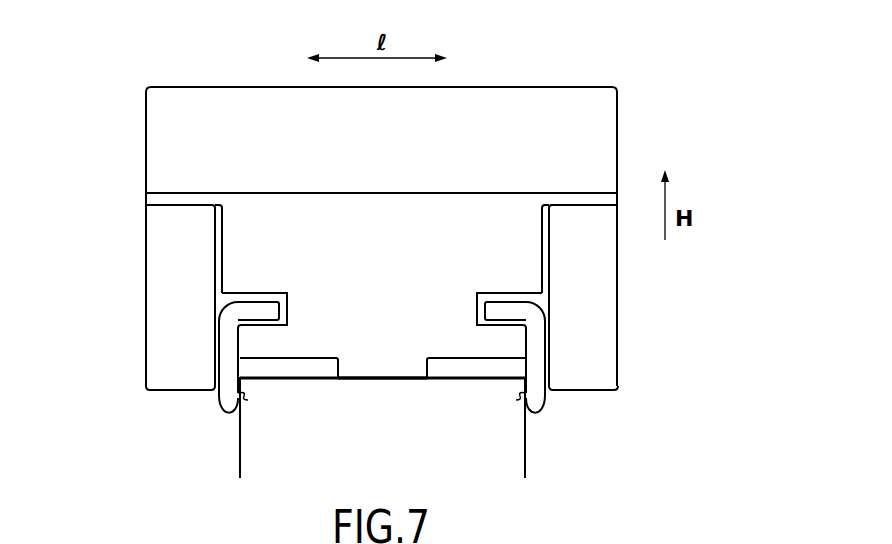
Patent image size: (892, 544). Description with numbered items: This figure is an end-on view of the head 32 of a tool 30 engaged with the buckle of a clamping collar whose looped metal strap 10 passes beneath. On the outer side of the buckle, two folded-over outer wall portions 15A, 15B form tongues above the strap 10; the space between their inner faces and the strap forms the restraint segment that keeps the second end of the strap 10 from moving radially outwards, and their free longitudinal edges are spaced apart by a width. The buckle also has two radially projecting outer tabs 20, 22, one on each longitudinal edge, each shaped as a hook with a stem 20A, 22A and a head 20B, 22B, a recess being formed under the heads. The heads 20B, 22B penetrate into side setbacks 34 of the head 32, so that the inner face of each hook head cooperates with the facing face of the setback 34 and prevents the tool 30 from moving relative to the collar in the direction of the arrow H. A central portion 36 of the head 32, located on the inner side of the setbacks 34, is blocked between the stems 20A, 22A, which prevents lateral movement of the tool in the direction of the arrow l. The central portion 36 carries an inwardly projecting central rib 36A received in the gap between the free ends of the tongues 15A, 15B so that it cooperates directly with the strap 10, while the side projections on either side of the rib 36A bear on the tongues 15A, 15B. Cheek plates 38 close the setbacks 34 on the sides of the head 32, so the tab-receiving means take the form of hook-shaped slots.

The strap 10 is at (382, 418).
The outer wall portion 15A is at (475, 364).
The outer wall portion 15B is at (292, 364).
The outer tab 20 is at (554, 355).
The stem 20A is at (536, 352).
The head 20B is at (498, 306).
The outer tab 22 is at (212, 355).
The stem 22A is at (228, 352).
The head 22B is at (263, 306).
The tool 30 is at (641, 73).
The head 32 is at (471, 208).
The side setback 34 is at (236, 298).
The central portion 36 is at (388, 293).
The central rib 36A is at (360, 364).
The cheek plate 38 is at (146, 292).